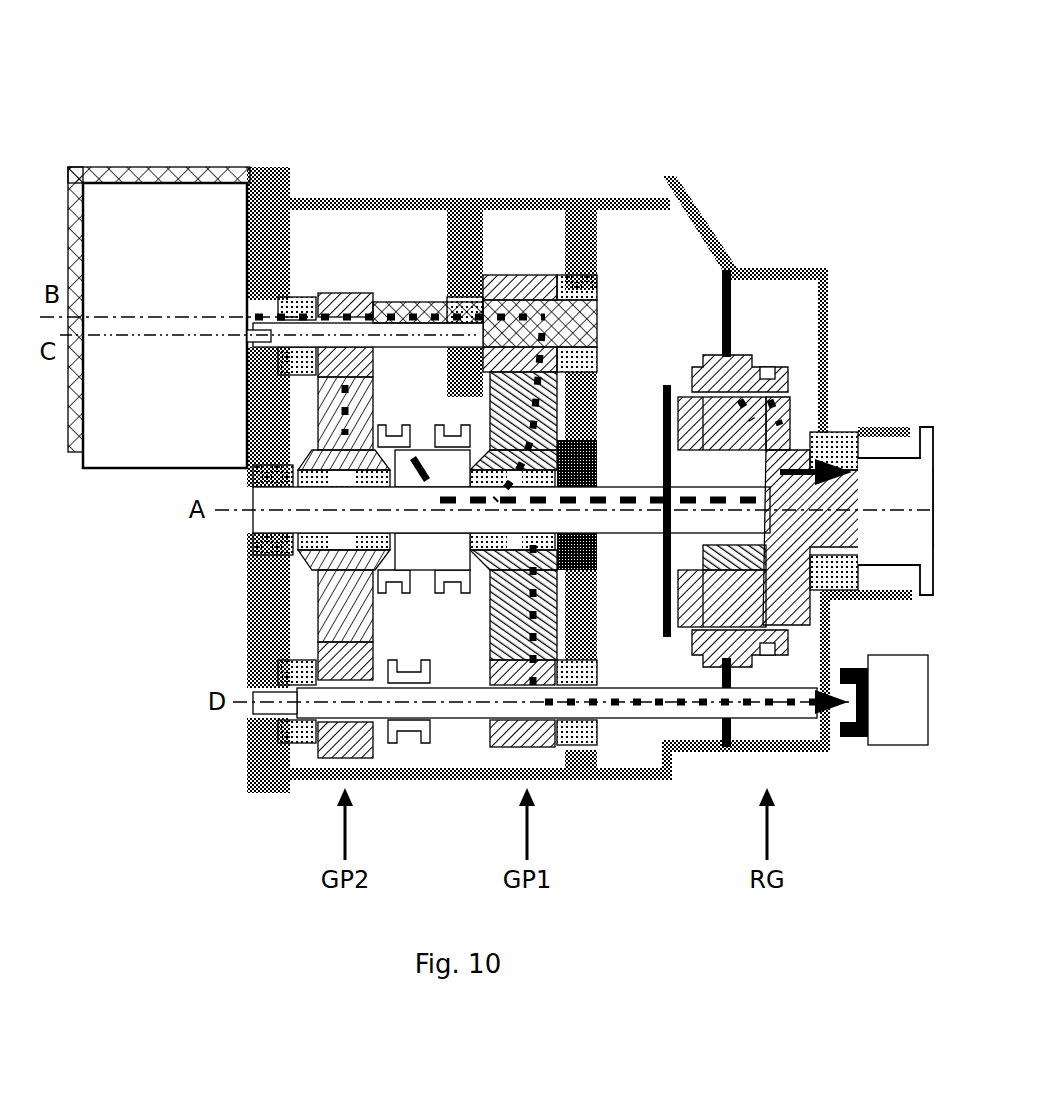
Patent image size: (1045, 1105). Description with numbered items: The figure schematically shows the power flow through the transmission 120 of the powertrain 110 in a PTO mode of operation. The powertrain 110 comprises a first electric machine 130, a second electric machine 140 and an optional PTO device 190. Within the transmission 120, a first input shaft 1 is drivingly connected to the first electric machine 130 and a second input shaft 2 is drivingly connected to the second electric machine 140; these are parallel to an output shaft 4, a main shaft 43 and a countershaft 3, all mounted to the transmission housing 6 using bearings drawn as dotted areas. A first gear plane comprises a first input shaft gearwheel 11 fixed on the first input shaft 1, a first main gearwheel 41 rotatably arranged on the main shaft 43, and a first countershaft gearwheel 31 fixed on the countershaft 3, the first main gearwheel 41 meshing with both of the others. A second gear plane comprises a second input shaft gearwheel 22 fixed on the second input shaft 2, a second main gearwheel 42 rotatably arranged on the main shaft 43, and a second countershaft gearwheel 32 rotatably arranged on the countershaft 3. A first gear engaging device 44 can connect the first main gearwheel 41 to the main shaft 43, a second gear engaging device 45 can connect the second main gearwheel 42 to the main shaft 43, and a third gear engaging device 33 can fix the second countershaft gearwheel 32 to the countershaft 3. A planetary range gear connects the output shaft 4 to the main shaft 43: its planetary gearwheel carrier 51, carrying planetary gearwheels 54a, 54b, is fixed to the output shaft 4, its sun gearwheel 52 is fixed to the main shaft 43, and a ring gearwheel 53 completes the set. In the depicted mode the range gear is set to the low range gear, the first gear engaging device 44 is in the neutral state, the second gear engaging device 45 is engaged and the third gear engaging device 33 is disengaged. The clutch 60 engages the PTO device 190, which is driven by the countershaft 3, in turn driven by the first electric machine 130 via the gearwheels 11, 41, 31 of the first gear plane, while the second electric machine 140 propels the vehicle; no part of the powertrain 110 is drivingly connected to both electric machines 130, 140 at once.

The powertrain 110 is at (218, 104).
The transmission 120 is at (552, 175).
The first electric machine 130 is at (103, 168).
The second electric machine 140 is at (155, 463).
The transmission housing 6 is at (328, 200).
The second input shaft gearwheel 22 is at (345, 292).
The first input shaft 1 is at (388, 302).
The second input shaft 2 is at (425, 302).
The first input shaft gearwheel 11 is at (508, 274).
The ring gearwheel 53 is at (737, 358).
The planetary gearwheel carrier 51 is at (765, 395).
The planetary gearwheel 54a is at (782, 432).
The sun gearwheel 52 is at (787, 452).
The output shaft 4 is at (873, 535).
The second gear engaging device 45 is at (393, 436).
The first gear engaging device 44 is at (443, 436).
The main shaft 43 is at (441, 525).
The first main gearwheel 41 is at (505, 632).
The second main gearwheel 42 is at (318, 630).
The third gear engaging device 33 is at (420, 745).
The countershaft 3 is at (473, 718).
The first countershaft gearwheel 31 is at (517, 748).
The second countershaft gearwheel 32 is at (325, 758).
The planetary gearwheel 54b is at (753, 650).
The clutch 60 is at (857, 735).
The PTO device 190 is at (917, 745).